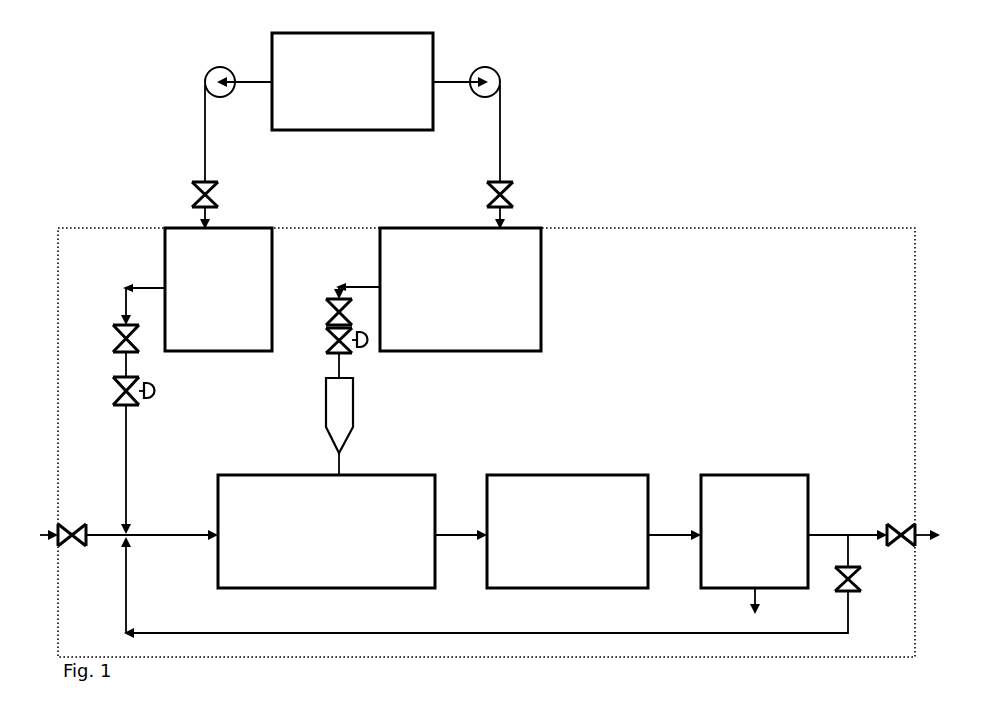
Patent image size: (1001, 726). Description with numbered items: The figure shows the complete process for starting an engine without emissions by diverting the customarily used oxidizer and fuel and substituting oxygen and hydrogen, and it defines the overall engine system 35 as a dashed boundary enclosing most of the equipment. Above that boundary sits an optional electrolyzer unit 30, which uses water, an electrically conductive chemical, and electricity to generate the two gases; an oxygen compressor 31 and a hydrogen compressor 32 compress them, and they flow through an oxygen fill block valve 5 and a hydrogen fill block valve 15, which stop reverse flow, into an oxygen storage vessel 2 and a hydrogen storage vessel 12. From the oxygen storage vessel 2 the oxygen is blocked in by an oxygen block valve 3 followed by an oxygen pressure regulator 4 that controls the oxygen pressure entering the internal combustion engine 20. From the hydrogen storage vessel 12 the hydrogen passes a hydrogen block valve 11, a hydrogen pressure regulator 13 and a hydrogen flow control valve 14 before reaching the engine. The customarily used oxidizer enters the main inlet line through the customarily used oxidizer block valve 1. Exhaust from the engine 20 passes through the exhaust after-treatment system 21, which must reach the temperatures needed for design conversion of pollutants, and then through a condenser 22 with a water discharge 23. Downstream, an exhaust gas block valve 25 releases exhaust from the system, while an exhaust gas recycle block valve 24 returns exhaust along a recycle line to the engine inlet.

The customarily used oxidizer block valve 1 is at (70, 522).
The oxygen storage vessel 2 is at (275, 249).
The oxygen block valve 3 is at (115, 338).
The oxygen pressure regulator 4 is at (116, 386).
The oxygen fill block valve 5 is at (218, 192).
The hydrogen block valve 11 is at (330, 314).
The hydrogen storage vessel 12 is at (543, 243).
The hydrogen pressure regulator 13 is at (355, 353).
The hydrogen flow control valve 14 is at (357, 407).
The hydrogen fill block valve 15 is at (512, 192).
The internal combustion engine 20 is at (438, 477).
The exhaust after-treatment system 21 is at (652, 477).
The condenser 22 is at (812, 477).
The water discharge 23 is at (745, 599).
The exhaust gas recycle block valve 24 is at (860, 577).
The exhaust gas block valve 25 is at (905, 520).
The electrolyzer unit 30 is at (437, 43).
The oxygen compressor 31 is at (207, 68).
The hydrogen compressor 32 is at (502, 70).
The overall engine system 35 is at (655, 225).